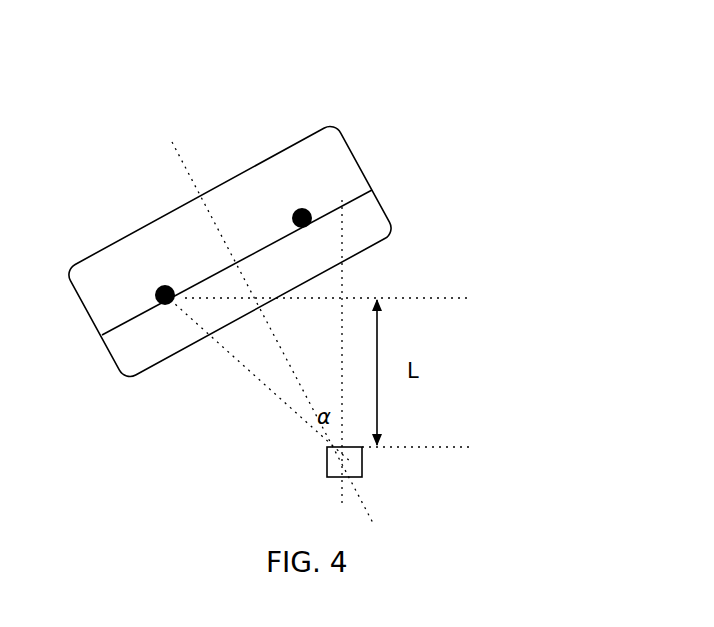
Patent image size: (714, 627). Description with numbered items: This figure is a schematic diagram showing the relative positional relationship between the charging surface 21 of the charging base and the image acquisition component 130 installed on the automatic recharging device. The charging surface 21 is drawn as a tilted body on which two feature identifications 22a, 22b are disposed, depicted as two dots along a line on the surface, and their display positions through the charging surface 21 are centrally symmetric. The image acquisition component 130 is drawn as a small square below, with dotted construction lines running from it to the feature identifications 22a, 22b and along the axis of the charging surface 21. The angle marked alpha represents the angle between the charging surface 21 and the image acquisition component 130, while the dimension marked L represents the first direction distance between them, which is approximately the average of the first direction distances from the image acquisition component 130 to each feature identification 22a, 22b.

The charging surface 21 is at (348, 192).
The feature identification 22a is at (165, 295).
The feature identification 22b is at (312, 222).
The image acquisition component 130 is at (363, 476).